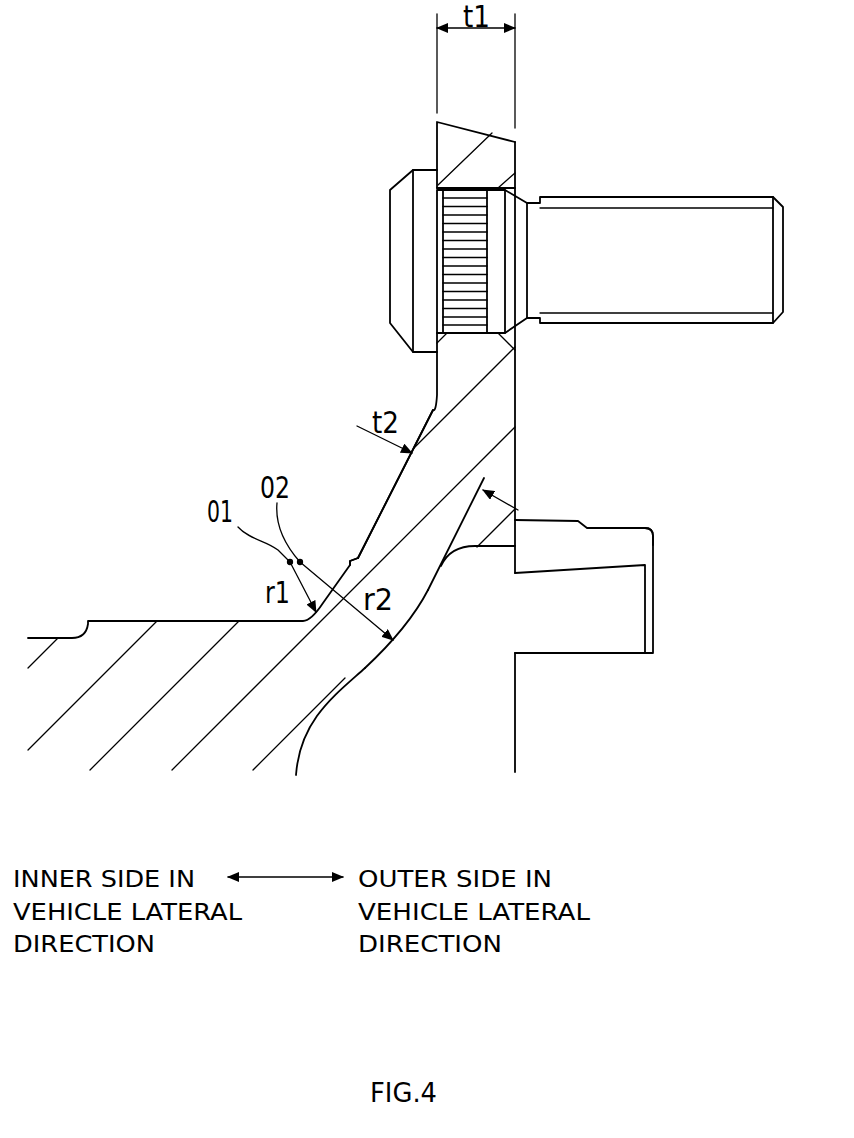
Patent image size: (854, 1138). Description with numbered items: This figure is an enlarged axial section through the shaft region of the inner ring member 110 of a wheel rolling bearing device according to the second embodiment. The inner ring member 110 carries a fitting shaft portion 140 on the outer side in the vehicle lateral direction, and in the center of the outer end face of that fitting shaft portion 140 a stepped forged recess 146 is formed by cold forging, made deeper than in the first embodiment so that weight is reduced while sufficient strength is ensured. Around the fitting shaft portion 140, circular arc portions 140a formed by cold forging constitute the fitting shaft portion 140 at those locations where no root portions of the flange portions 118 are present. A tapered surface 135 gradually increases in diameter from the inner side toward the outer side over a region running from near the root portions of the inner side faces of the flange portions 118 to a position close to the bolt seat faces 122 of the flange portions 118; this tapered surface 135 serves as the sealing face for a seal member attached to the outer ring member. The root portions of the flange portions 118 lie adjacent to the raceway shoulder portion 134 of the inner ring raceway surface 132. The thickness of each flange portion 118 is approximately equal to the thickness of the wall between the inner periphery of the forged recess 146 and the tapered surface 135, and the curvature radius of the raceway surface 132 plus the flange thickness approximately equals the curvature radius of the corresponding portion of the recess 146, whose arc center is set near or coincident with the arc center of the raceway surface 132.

The inner ring member 110 is at (118, 614).
The flange portion 118 is at (448, 367).
The bolt seat face 122 is at (437, 342).
The inner ring raceway surface 132 is at (323, 603).
The raceway shoulder portion 134 is at (353, 567).
The tapered surface 135 is at (395, 485).
The fitting shaft portion 140 is at (624, 521).
The circular arc portion 140a is at (642, 545).
The forged recess 146 is at (300, 742).